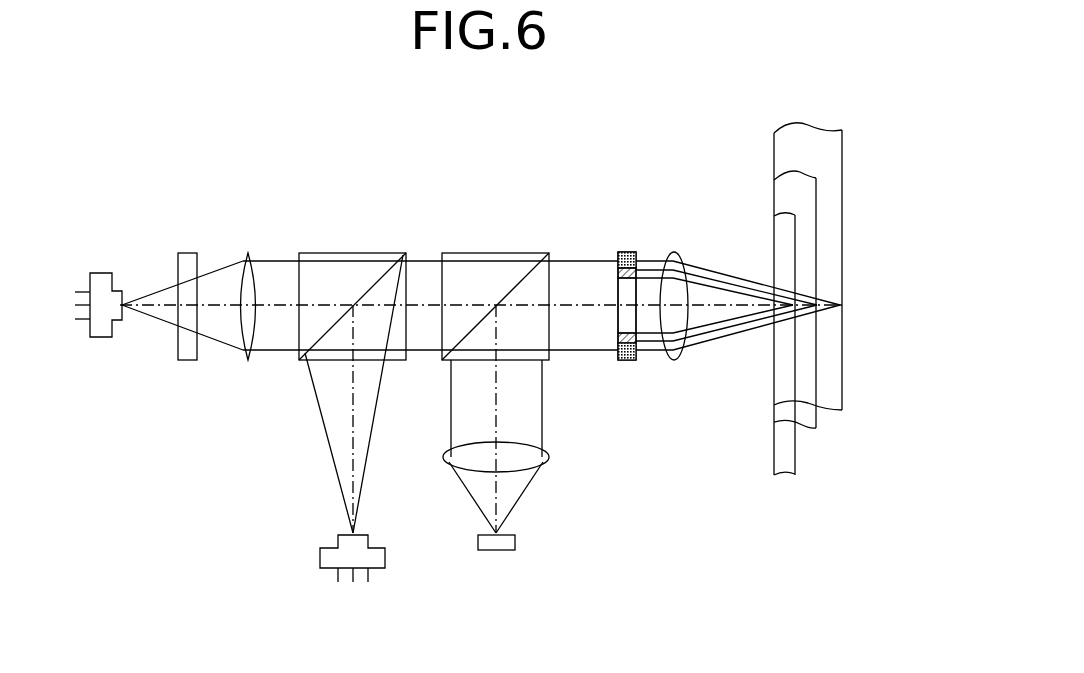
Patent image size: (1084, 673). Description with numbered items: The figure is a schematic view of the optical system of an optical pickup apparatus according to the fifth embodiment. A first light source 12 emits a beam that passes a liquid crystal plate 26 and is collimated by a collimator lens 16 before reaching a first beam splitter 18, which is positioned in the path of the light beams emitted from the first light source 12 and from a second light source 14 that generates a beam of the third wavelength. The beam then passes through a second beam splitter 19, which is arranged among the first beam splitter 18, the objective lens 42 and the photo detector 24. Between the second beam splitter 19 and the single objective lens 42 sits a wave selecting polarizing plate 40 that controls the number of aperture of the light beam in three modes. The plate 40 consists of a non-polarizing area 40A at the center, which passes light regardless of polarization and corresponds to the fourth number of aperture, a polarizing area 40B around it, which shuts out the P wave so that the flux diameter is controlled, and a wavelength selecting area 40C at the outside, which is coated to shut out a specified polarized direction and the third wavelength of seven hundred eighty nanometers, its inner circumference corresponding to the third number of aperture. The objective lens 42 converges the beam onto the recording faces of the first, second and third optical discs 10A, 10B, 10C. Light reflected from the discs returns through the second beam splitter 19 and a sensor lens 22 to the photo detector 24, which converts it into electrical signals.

The first light source 12 is at (103, 277).
The liquid crystal plate 26 is at (193, 253).
The collimator lens 16 is at (245, 261).
The first beam splitter 18 is at (405, 251).
The second beam splitter 19 is at (505, 252).
The wave selecting polarizing plate 40 is at (633, 255).
The non-polarizing area 40A is at (622, 320).
The polarizing area 40B is at (618, 270).
The wavelength selecting area 40C is at (633, 360).
The objective lens 42 is at (677, 253).
The first optical disc 10A is at (787, 449).
The second optical disc 10B is at (810, 275).
The third optical disc 10C is at (832, 216).
The second light source 14 is at (385, 550).
The sensor lens 22 is at (545, 458).
The photo detector 24 is at (508, 547).